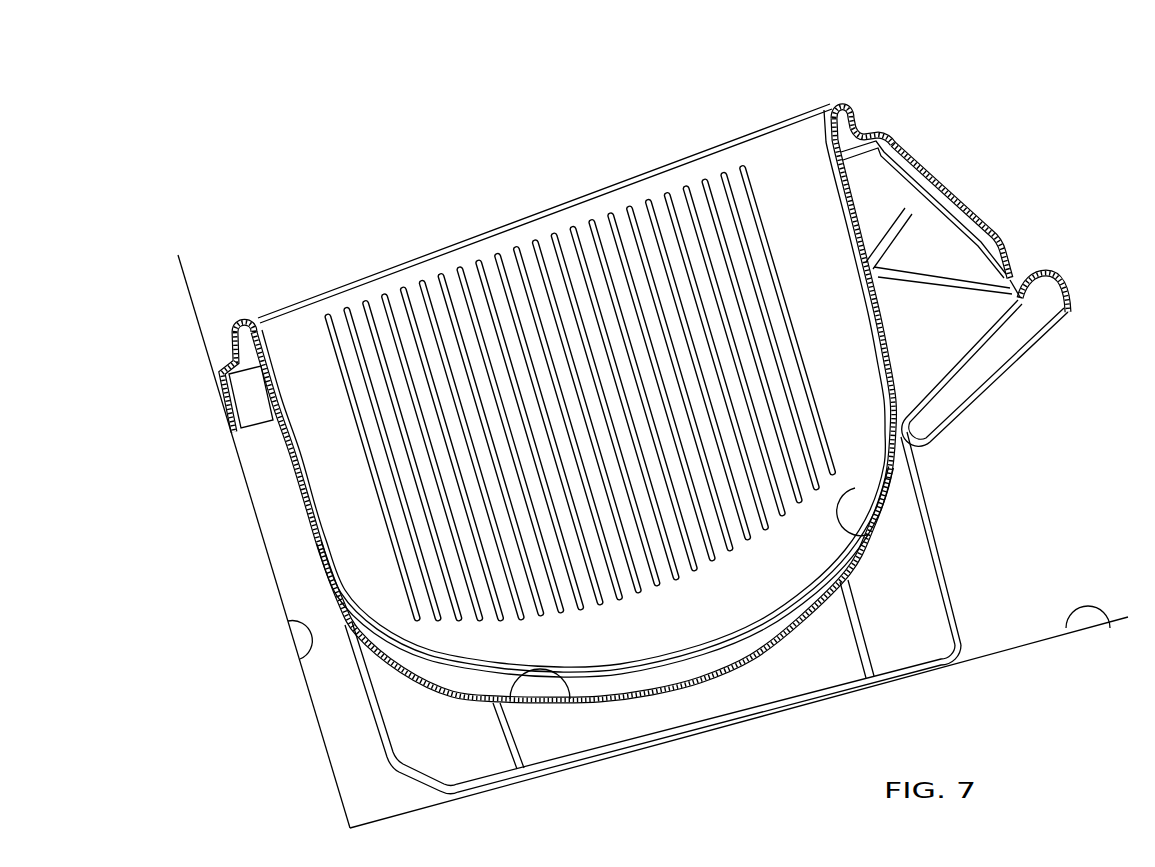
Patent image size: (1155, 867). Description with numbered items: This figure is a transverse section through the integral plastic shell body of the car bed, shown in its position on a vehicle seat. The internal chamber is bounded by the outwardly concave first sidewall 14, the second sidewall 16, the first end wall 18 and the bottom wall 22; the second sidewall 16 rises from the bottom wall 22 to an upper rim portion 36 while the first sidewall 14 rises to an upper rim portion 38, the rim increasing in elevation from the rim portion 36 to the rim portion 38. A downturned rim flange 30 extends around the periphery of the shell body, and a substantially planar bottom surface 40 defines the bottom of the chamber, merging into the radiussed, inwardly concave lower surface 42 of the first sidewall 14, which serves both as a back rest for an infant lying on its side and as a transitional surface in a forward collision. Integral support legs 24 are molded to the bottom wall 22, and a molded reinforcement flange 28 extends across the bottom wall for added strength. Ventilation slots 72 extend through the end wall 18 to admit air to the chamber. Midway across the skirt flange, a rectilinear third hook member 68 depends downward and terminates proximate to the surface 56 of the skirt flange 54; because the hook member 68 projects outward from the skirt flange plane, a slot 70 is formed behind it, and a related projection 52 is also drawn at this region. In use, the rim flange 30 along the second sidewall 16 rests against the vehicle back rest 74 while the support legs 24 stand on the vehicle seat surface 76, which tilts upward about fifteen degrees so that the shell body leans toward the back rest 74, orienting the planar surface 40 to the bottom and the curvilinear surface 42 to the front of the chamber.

The first sidewall 14 is at (866, 208).
The second sidewall 16 is at (286, 462).
The first end wall 18 is at (808, 163).
The bottom wall 22 is at (611, 718).
The support legs 24 is at (428, 786).
The reinforcement flange 28 is at (846, 662).
The rim flange 30 is at (235, 368).
The upper rim portion 36 is at (242, 318).
The upper rim portion 38 is at (832, 101).
The bottom surface 40 is at (569, 702).
The lower inward facing surface 42 is at (880, 540).
The projection 52 is at (871, 133).
The skirt flange 54 is at (1070, 305).
The surface 56 is at (1030, 285).
The third hook member 68 is at (947, 186).
The slot 70 is at (957, 221).
The ventilation slots 72 is at (508, 298).
The vehicle back rest 74 is at (298, 660).
The vehicle seat surface 76 is at (1108, 628).